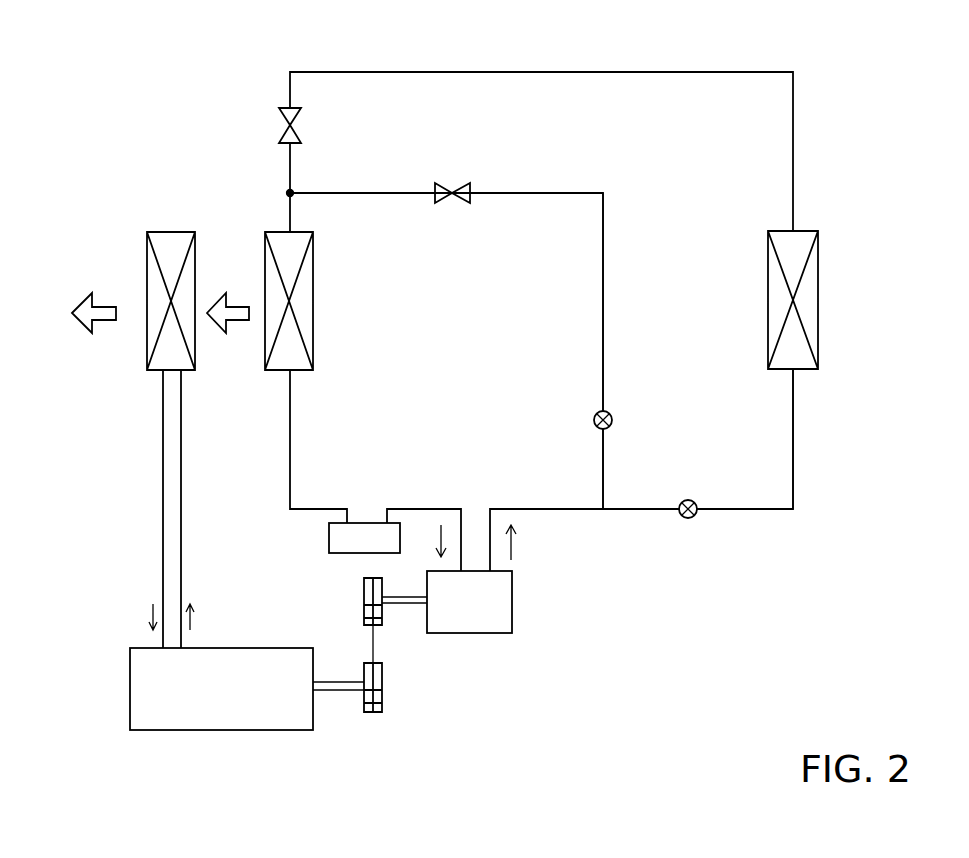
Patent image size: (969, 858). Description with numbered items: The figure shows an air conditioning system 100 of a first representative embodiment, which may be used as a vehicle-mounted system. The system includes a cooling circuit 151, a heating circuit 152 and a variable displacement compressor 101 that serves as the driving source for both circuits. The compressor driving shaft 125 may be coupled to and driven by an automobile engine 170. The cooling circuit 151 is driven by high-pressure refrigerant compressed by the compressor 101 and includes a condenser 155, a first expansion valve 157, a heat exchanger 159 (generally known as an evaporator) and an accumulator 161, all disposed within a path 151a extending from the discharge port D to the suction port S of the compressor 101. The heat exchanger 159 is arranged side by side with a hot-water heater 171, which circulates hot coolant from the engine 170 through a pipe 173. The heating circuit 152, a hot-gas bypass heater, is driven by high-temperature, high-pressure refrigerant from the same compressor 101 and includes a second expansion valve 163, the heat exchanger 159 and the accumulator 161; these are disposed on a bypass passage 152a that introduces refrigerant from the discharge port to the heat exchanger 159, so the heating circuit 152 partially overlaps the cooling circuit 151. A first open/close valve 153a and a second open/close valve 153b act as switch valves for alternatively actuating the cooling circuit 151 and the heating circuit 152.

The air conditioning system 100 is at (748, 622).
The variable displacement compressor 101 is at (512, 612).
The compressor driving shaft 125 is at (403, 610).
The cooling circuit 151 is at (793, 424).
The path 151a is at (788, 468).
The heating circuit 152 is at (603, 308).
The bypass passage 152a is at (603, 240).
The first open/close valve 153a is at (690, 519).
The second open/close valve 153b is at (612, 420).
The condenser 155 is at (818, 278).
The first expansion valve 157 is at (283, 115).
The heat exchanger 159 is at (313, 272).
The accumulator 161 is at (365, 537).
The second expansion valve 163 is at (467, 183).
The automobile engine 170 is at (138, 703).
The hot-water heater 171 is at (172, 228).
The pipe 173 is at (163, 492).